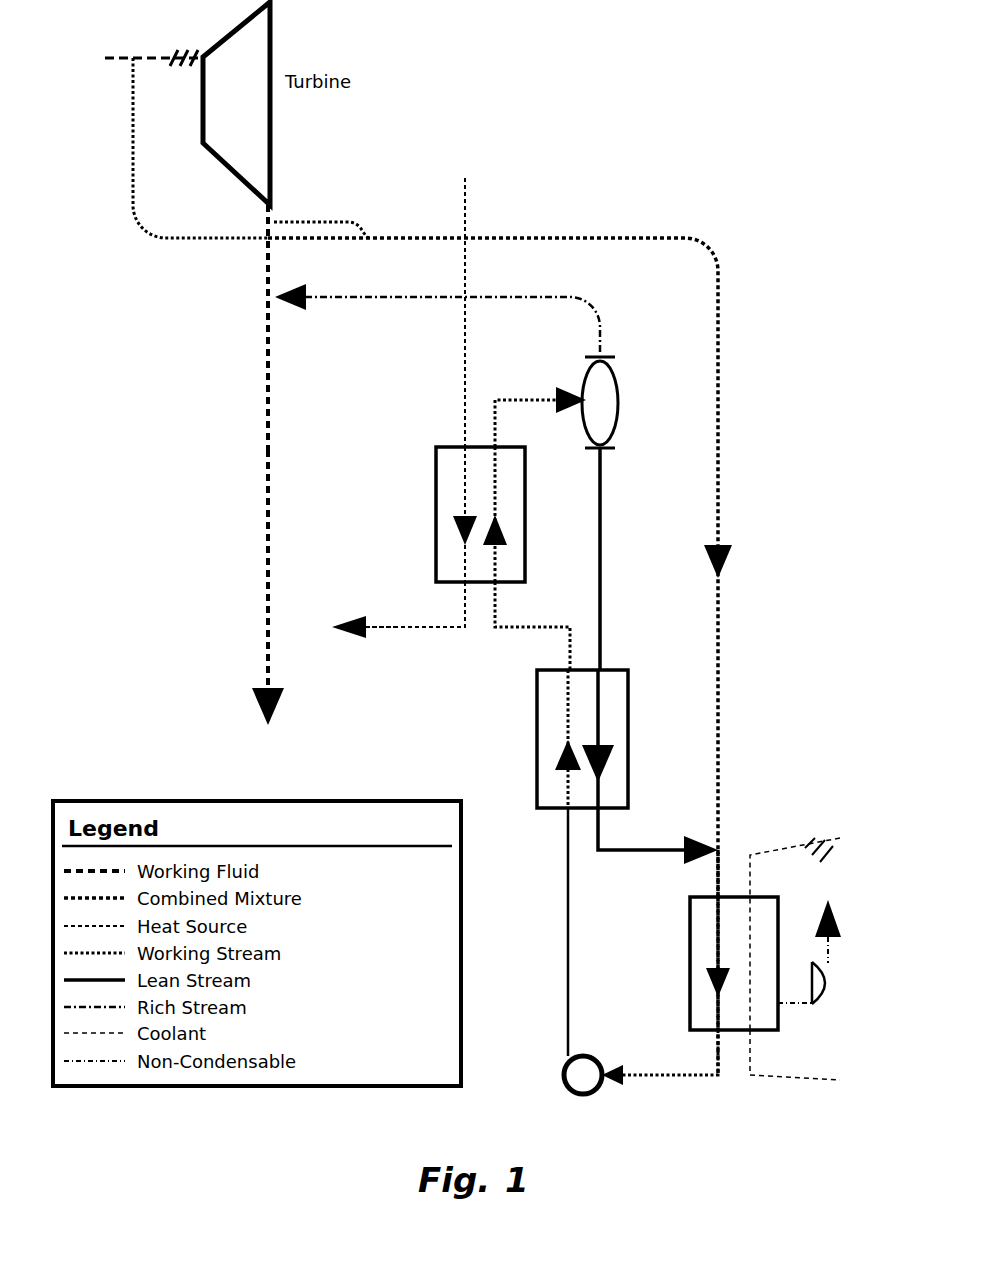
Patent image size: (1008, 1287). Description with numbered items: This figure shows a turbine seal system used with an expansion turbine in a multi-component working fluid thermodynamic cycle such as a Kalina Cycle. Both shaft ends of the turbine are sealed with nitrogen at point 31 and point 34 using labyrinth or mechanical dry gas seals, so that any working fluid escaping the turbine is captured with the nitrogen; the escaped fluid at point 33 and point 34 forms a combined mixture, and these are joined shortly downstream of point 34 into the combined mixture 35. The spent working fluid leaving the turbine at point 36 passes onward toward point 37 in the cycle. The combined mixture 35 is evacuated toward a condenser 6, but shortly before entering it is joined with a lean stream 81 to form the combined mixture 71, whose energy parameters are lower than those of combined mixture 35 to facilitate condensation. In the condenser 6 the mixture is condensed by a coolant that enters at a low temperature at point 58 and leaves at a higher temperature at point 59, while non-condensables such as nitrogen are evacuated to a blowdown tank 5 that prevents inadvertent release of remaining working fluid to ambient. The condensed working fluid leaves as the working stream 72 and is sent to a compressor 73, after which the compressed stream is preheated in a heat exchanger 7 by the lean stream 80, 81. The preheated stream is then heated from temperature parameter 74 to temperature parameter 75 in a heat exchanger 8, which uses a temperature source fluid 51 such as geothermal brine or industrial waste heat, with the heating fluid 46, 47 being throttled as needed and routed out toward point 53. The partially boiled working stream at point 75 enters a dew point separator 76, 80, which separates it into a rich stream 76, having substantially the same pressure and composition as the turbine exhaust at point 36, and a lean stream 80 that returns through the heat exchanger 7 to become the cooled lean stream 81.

The blowdown tank 5 is at (813, 942).
The condenser 6 is at (734, 963).
The heat exchanger 7 is at (582, 739).
The heat exchanger 8 is at (480, 514).
The nitrogen seal point 31 is at (155, 43).
The combined mixture point 33 is at (200, 148).
The nitrogen seal point 34 is at (321, 218).
The combined mixture 35 is at (500, 656).
The spent stream exit point 36 is at (247, 327).
The working fluid point 37 is at (255, 523).
The heating fluid 46 is at (451, 498).
The heating fluid 47 is at (398, 610).
The temperature source fluid 51 is at (464, 297).
The heat source return 53 is at (392, 643).
The coolant 58 is at (795, 1055).
The coolant 59 is at (795, 934).
The combined mixture 71 is at (705, 873).
The working stream 72 is at (660, 1057).
The compressor 73 is at (569, 951).
The working stream temperature parameter 74 is at (538, 695).
The partially boiled working stream 75 is at (540, 417).
The rich stream 76 is at (587, 390).
The lean stream 80 is at (588, 628).
The lean stream 81 is at (658, 836).